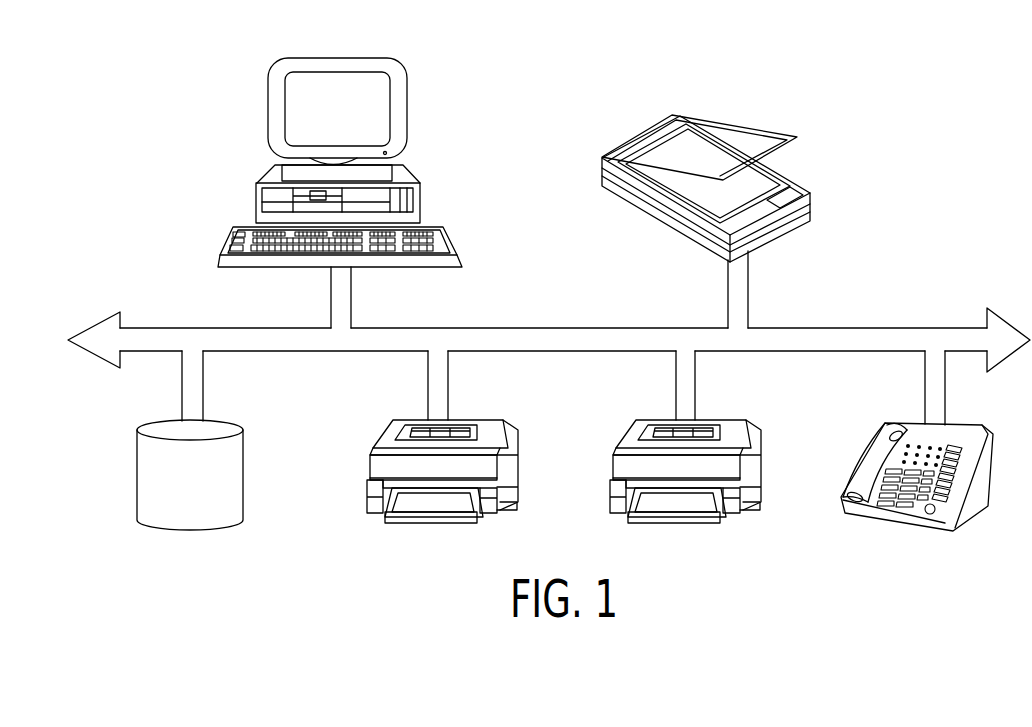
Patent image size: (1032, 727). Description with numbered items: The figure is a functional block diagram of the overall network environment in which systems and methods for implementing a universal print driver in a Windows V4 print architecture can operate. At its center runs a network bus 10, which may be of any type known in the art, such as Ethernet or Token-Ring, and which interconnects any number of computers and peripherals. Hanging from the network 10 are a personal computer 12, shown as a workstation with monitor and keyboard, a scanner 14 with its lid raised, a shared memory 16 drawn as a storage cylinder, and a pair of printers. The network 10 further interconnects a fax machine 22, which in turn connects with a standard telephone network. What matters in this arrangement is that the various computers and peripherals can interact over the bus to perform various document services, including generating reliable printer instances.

The network bus 10 is at (553, 327).
The personal computer 12 is at (408, 113).
The scanner 14 is at (688, 122).
The shared memory 16 is at (245, 450).
The fax machine 22 is at (958, 423).